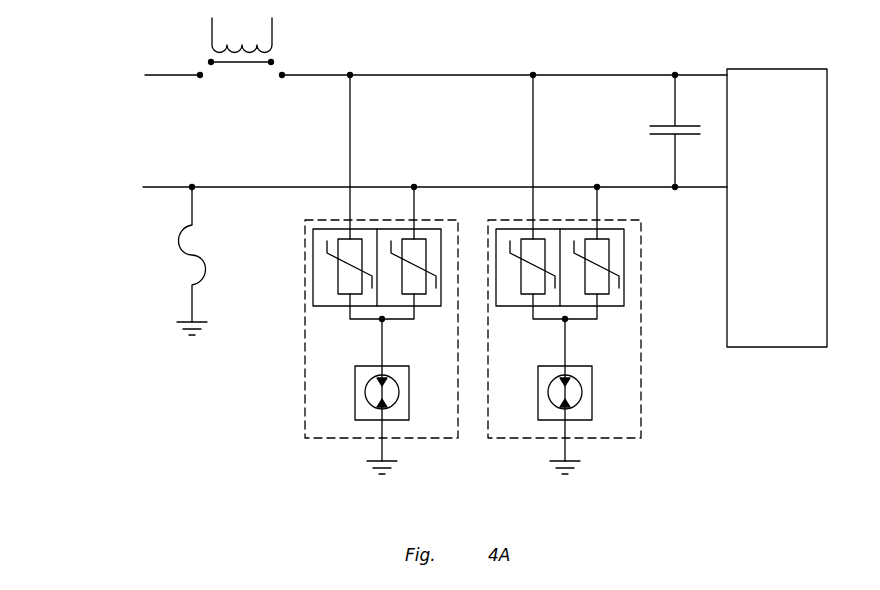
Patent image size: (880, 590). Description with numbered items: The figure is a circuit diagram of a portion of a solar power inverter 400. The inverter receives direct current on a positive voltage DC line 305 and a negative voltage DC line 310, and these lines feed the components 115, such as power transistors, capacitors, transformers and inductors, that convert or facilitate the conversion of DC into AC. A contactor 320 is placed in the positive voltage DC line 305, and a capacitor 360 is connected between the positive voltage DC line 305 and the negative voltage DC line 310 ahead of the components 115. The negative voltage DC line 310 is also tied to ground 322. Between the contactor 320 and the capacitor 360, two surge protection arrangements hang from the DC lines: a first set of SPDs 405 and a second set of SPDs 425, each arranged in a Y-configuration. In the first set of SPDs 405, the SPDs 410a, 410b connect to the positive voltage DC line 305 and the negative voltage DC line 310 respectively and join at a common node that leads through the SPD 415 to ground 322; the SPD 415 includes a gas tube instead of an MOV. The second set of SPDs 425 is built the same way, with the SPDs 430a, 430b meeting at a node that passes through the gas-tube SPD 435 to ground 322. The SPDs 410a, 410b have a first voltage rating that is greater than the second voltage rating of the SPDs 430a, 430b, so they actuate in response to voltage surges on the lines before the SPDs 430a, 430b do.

The positive voltage DC line 305 is at (112, 71).
The negative voltage DC line 310 is at (114, 187).
The contactor 320 is at (273, 30).
The ground 322 is at (178, 325).
The capacitor 360 is at (663, 126).
The components 115 is at (773, 69).
The first set of SPDs 405 is at (355, 278).
The SPD 410a is at (325, 229).
The SPD 410b is at (390, 229).
The SPD 415 is at (410, 416).
The second set of SPDs 425 is at (600, 278).
The SPD 430a is at (508, 229).
The SPD 430b is at (573, 229).
The SPD 435 is at (593, 416).
The solar power inverter 400 is at (189, 460).